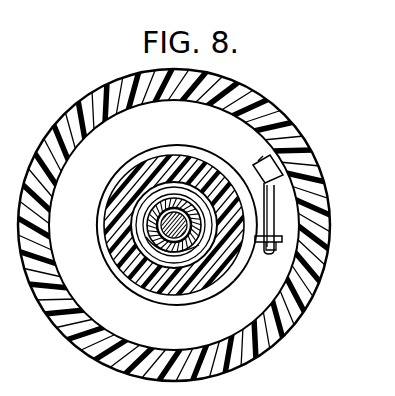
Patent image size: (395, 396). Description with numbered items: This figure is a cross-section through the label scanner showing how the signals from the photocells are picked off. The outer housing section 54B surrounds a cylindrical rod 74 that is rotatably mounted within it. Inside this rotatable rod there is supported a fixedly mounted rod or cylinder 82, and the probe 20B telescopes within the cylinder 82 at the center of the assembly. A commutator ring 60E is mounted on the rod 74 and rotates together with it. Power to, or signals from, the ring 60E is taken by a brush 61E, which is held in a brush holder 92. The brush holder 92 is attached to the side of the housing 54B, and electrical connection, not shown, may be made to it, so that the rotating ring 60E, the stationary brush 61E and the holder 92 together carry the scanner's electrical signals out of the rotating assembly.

The housing section 54B is at (263, 101).
The commutator ring 60E is at (163, 146).
The brush 61E is at (255, 247).
The cylindrical rod 74 is at (168, 162).
The fixedly mounted rod or cylinder 82 is at (203, 190).
The hub / shaft 20B is at (140, 203).
The brush holder 92 is at (272, 213).